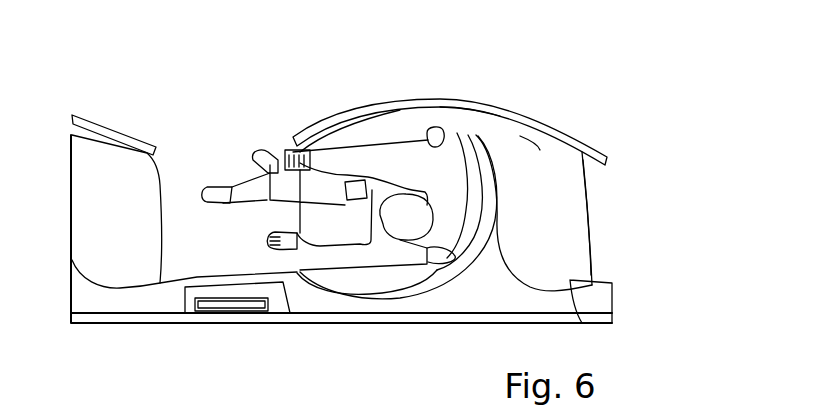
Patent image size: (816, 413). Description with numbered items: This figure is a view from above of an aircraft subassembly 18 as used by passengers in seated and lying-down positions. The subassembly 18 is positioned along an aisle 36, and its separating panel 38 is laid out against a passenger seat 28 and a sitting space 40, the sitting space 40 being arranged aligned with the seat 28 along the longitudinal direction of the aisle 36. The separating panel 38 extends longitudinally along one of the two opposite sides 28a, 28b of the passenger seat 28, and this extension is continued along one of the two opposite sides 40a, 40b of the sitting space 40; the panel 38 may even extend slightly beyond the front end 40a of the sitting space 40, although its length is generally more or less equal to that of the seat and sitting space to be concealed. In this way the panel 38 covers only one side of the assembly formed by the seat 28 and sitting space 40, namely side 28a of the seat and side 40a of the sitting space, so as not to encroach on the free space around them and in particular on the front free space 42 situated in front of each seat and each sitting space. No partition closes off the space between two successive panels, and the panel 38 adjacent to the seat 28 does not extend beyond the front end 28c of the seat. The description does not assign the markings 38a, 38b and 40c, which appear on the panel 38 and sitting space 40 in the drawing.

The aircraft subassembly 18 is at (260, 135).
The passenger seat 28 is at (445, 160).
The side of the passenger seat 28a is at (395, 127).
The side of the passenger seat 28b is at (385, 277).
The front end of the seat 28c is at (290, 147).
The aisle 36 is at (338, 94).
The separating panel 38 is at (95, 115).
The rail portion 38a is at (465, 123).
The rail end portion 38b is at (323, 115).
The sitting space 40 is at (135, 195).
The front end of the sitting space 40a is at (538, 143).
The side of the sitting space 40b is at (582, 323).
The seat back rear 40c is at (592, 223).
The front free space 42 is at (190, 177).